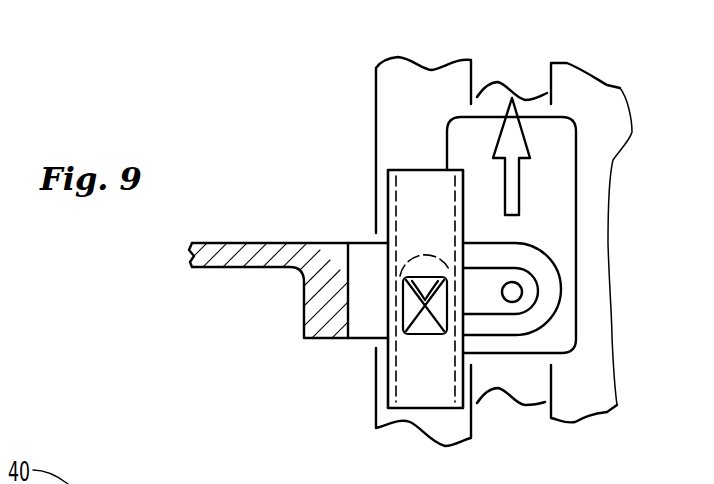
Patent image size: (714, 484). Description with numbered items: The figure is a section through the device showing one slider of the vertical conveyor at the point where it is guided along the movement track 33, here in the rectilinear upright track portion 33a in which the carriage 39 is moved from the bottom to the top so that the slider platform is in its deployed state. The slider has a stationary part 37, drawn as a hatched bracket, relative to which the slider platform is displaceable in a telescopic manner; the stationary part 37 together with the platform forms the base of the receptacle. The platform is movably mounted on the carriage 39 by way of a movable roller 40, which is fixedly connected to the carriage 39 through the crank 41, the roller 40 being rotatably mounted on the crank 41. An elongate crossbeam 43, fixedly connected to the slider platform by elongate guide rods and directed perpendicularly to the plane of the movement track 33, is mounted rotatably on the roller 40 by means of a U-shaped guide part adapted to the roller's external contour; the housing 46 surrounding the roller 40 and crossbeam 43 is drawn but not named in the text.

The movement track 33 is at (538, 105).
The rectilinear upright track portion 33a is at (515, 382).
The stationary part 37 is at (285, 247).
The carriage 39 is at (467, 141).
The roller 40 is at (427, 262).
The crank 41 is at (520, 298).
The crossbeam 43 is at (425, 327).
The housing 46 is at (425, 393).